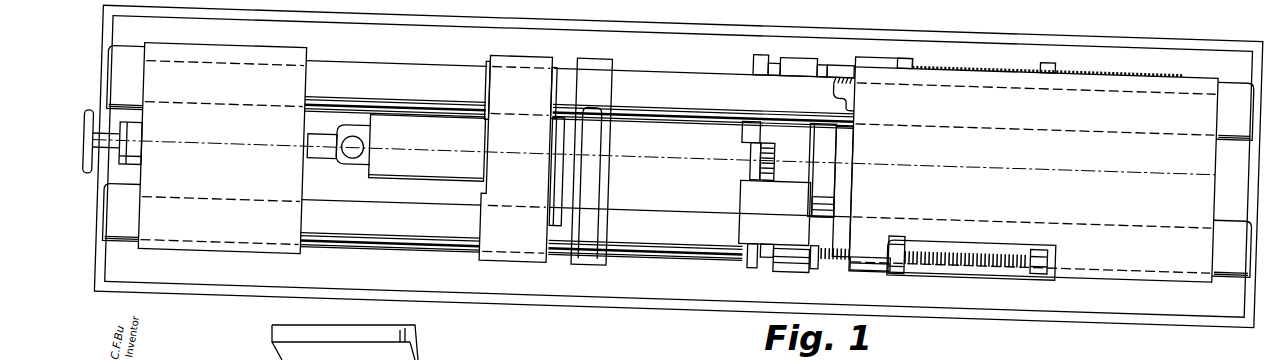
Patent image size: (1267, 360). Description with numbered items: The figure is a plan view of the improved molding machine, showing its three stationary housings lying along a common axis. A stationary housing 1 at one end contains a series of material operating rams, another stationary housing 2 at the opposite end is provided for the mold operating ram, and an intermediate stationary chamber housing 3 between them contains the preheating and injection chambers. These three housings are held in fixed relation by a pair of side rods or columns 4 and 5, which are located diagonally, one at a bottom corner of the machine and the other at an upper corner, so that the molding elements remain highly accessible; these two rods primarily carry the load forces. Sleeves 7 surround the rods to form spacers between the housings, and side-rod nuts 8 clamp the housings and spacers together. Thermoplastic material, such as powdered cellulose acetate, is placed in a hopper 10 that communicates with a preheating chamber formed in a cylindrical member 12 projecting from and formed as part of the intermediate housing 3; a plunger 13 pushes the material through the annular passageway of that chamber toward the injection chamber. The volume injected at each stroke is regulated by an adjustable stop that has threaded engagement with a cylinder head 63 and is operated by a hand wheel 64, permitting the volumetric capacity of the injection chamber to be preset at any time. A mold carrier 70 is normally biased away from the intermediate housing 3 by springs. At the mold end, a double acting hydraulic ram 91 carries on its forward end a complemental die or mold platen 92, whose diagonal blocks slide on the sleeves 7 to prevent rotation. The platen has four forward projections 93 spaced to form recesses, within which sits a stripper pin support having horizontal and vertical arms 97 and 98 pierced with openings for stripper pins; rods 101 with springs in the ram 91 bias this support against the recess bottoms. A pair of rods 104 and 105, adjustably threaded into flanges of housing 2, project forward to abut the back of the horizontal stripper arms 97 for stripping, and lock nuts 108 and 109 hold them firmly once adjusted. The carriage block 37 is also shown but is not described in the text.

The stationary housing 1 is at (229, 38).
The stationary housing 2 is at (1121, 39).
The intermediate stationary chamber housing 3 is at (642, 126).
The side rod 4 is at (661, 52).
The side rod 5 is at (668, 189).
The sleeves 7 is at (842, 44).
The side-rod nuts 8 is at (129, 46).
The hopper 10 is at (342, 123).
The cylindrical member 12 is at (383, 160).
The plunger 13 is at (331, 150).
The carriage block 37 is at (531, 35).
The cylinder head 63 is at (142, 133).
The hand wheel 64 is at (92, 107).
The mold carrier 70 is at (616, 118).
The double acting hydraulic ram 91 is at (828, 159).
The mold platen 92 is at (742, 180).
The forward projections 93 is at (756, 198).
The horizontal stripper arms 97 is at (756, 234).
The vertical stripper arms 98 is at (756, 136).
The rods 101 is at (781, 127).
The stripper rod 104 is at (987, 39).
The stripper rod 105 is at (987, 234).
The lock nut 108 is at (905, 30).
The lock nut 109 is at (908, 242).